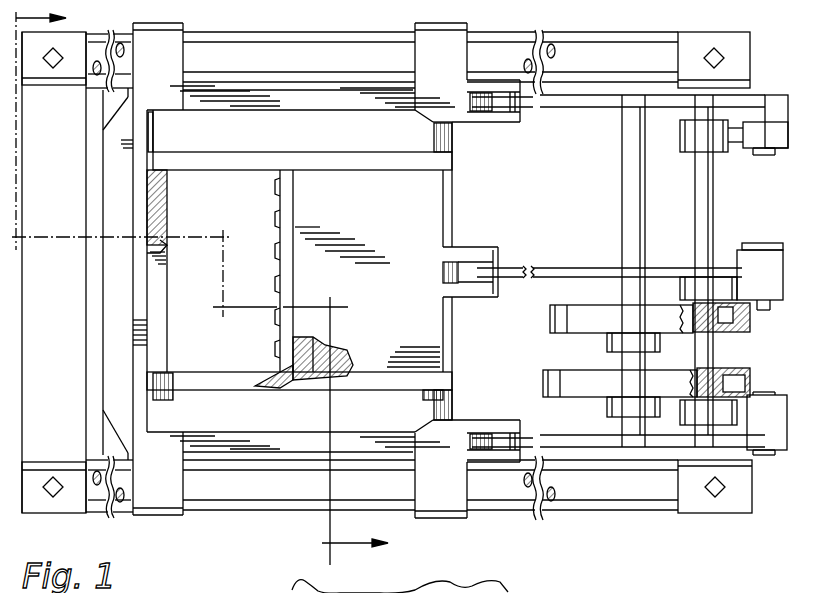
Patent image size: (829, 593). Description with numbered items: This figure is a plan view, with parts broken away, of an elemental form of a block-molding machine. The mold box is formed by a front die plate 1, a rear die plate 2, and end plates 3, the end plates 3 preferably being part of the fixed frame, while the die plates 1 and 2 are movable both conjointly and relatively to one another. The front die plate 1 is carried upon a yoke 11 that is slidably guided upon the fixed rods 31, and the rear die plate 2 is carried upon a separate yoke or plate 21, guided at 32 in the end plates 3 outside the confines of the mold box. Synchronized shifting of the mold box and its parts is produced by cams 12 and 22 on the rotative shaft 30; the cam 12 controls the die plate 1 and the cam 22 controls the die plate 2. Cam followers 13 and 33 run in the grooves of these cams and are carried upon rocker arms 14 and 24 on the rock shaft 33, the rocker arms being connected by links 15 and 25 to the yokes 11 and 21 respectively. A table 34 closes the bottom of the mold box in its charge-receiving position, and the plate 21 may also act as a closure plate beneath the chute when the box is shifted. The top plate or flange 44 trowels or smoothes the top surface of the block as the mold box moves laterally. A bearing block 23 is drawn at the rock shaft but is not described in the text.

The front die plate 1 is at (166, 251).
The rear die plate 2 is at (278, 214).
The end plates 3 is at (222, 160).
The yoke 11 is at (142, 152).
The cam 12 is at (546, 382).
The cam follower 13 is at (753, 378).
The rocker arm 14 is at (710, 407).
The link 15 is at (573, 441).
The yoke or plate 21 is at (390, 219).
The cam 22 is at (553, 321).
The bearing block 23 is at (732, 316).
The rocker arm 24 is at (708, 288).
The link 25 is at (545, 268).
The rotative shaft 30 is at (622, 205).
The fixed rods 31 is at (338, 53).
The guide 32 is at (346, 353).
The rock shaft 33 is at (697, 212).
The table 34 is at (206, 318).
The top plate or flange 44 is at (120, 340).